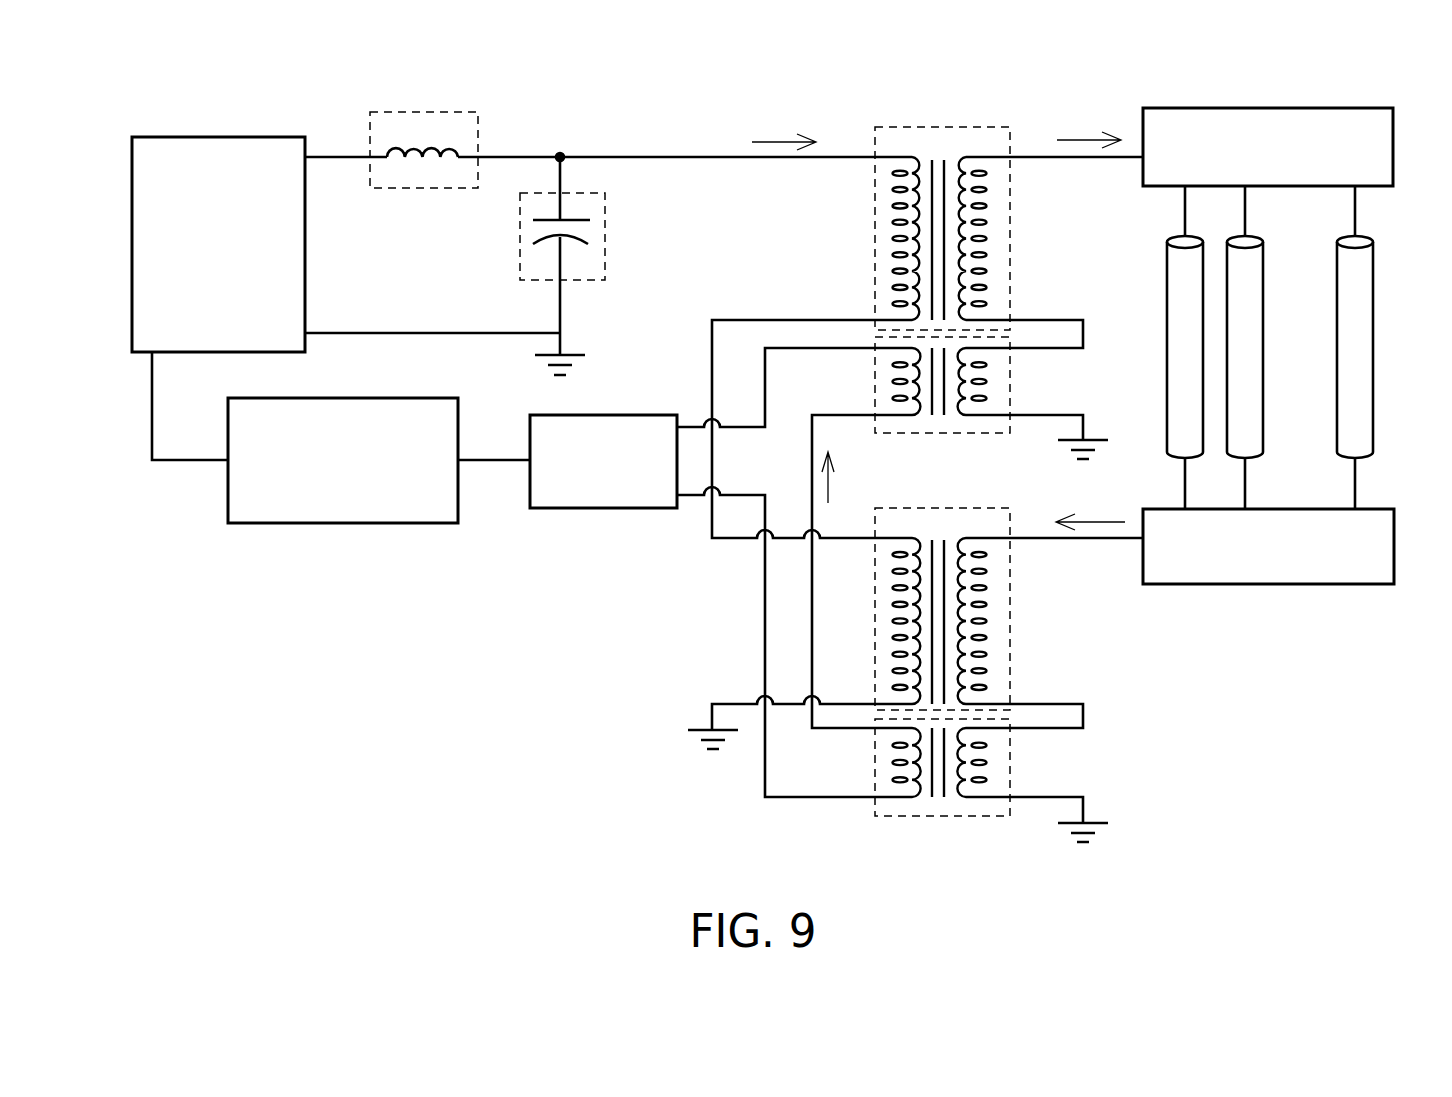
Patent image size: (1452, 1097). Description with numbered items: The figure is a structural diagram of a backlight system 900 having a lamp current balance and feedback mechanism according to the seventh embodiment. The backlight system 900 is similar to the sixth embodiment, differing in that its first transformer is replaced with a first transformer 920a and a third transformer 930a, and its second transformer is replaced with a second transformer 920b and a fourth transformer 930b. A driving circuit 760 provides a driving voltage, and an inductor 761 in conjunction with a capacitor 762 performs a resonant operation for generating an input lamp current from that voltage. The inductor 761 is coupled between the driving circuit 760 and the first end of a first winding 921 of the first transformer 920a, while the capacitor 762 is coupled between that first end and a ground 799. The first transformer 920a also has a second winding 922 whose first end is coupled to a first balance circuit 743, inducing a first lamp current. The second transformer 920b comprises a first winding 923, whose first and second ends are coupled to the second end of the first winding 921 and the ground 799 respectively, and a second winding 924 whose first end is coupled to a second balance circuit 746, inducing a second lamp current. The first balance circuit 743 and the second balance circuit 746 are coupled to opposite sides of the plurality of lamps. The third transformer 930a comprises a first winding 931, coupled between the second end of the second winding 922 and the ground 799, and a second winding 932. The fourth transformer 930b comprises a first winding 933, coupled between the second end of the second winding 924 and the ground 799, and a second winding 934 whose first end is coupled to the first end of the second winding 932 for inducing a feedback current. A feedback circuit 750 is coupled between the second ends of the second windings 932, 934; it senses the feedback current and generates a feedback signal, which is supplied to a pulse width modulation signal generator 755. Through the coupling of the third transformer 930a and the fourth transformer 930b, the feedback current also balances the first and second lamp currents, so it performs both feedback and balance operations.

The backlight system 900 is at (790, 482).
The driving circuit 760 is at (243, 137).
The inductor 761 is at (458, 112).
The capacitor 762 is at (605, 243).
The ground 799 is at (602, 371).
The pulse width modulation signal generator 755 is at (390, 523).
The feedback circuit 750 is at (603, 508).
The first transformer 920a is at (940, 208).
The first winding 921 is at (890, 235).
The second winding 922 is at (987, 233).
The third transformer 930a is at (936, 406).
The first winding 931 is at (987, 381).
The second winding 932 is at (890, 381).
The second transformer 920b is at (947, 588).
The first winding 923 is at (890, 621).
The second winding 924 is at (988, 620).
The fourth transformer 930b is at (938, 786).
The first winding 933 is at (988, 762).
The second winding 934 is at (890, 762).
The first balance circuit 743 is at (1358, 108).
The second balance circuit 746 is at (1358, 584).